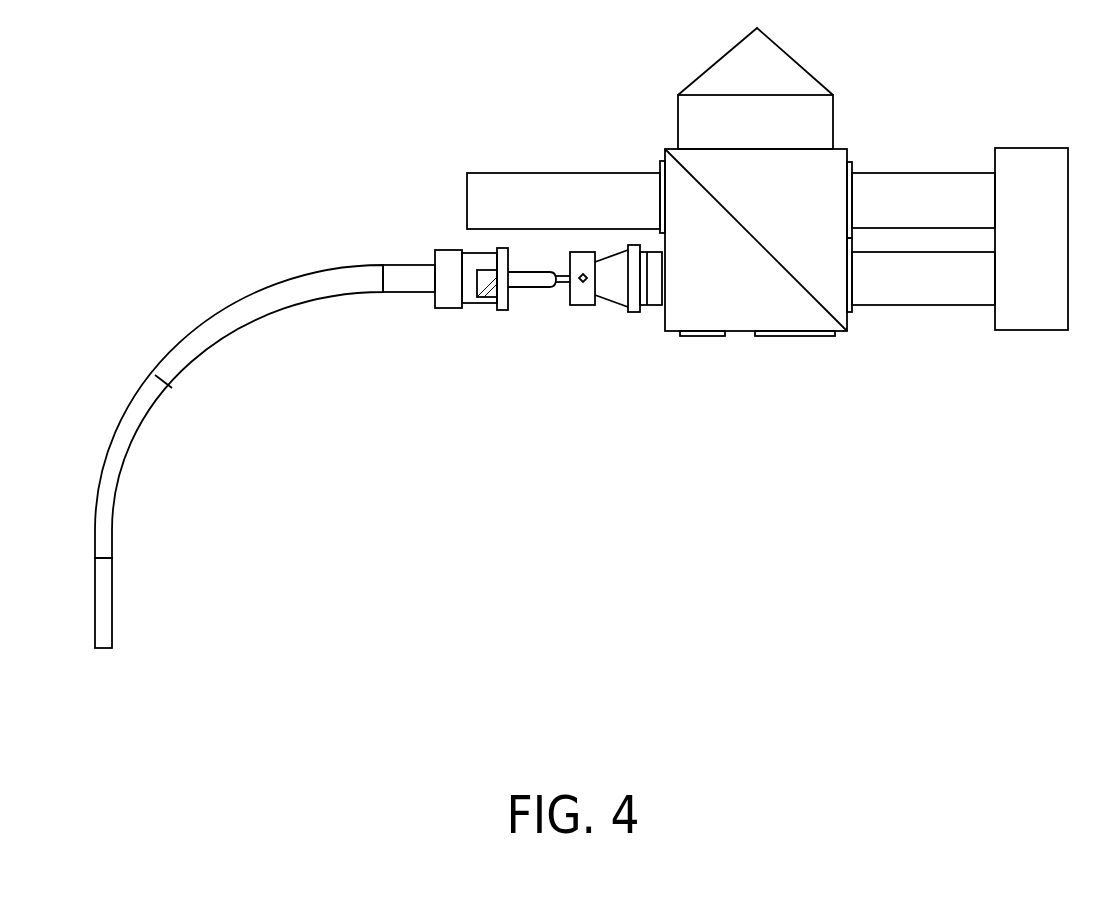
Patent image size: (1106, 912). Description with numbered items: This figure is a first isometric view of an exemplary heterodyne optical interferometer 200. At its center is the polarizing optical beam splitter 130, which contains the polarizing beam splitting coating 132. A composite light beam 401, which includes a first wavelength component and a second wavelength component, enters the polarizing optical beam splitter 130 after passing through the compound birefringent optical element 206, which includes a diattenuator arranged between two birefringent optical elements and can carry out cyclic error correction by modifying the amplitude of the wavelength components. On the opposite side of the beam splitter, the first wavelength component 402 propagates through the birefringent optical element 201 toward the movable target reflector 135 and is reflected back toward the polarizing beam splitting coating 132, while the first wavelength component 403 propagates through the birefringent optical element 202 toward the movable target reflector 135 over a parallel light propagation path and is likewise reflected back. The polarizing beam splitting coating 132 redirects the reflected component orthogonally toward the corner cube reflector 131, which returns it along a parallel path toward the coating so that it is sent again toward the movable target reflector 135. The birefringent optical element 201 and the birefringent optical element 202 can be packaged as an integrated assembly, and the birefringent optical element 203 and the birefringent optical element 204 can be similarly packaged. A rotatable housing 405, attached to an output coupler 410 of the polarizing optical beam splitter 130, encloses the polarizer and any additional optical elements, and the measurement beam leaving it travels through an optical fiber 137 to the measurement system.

The heterodyne optical interferometer 200 is at (986, 530).
The corner cube reflector 131 is at (717, 62).
The polarizing optical beam splitter 130 is at (772, 187).
The polarizing beam splitting coating 132 is at (709, 193).
The movable target reflector 135 is at (1011, 232).
The optical fiber 137 is at (271, 315).
The birefringent optical element 201 is at (853, 168).
The birefringent optical element 202 is at (853, 317).
The birefringent optical element 203 is at (775, 337).
The birefringent optical element 204 is at (723, 337).
The compound birefringent optical element 206 is at (660, 163).
The composite light beam 401 is at (548, 173).
The first wavelength component 402 is at (908, 173).
The first wavelength component 403 is at (910, 305).
The housing 405 is at (570, 300).
The output coupler 410 is at (632, 302).